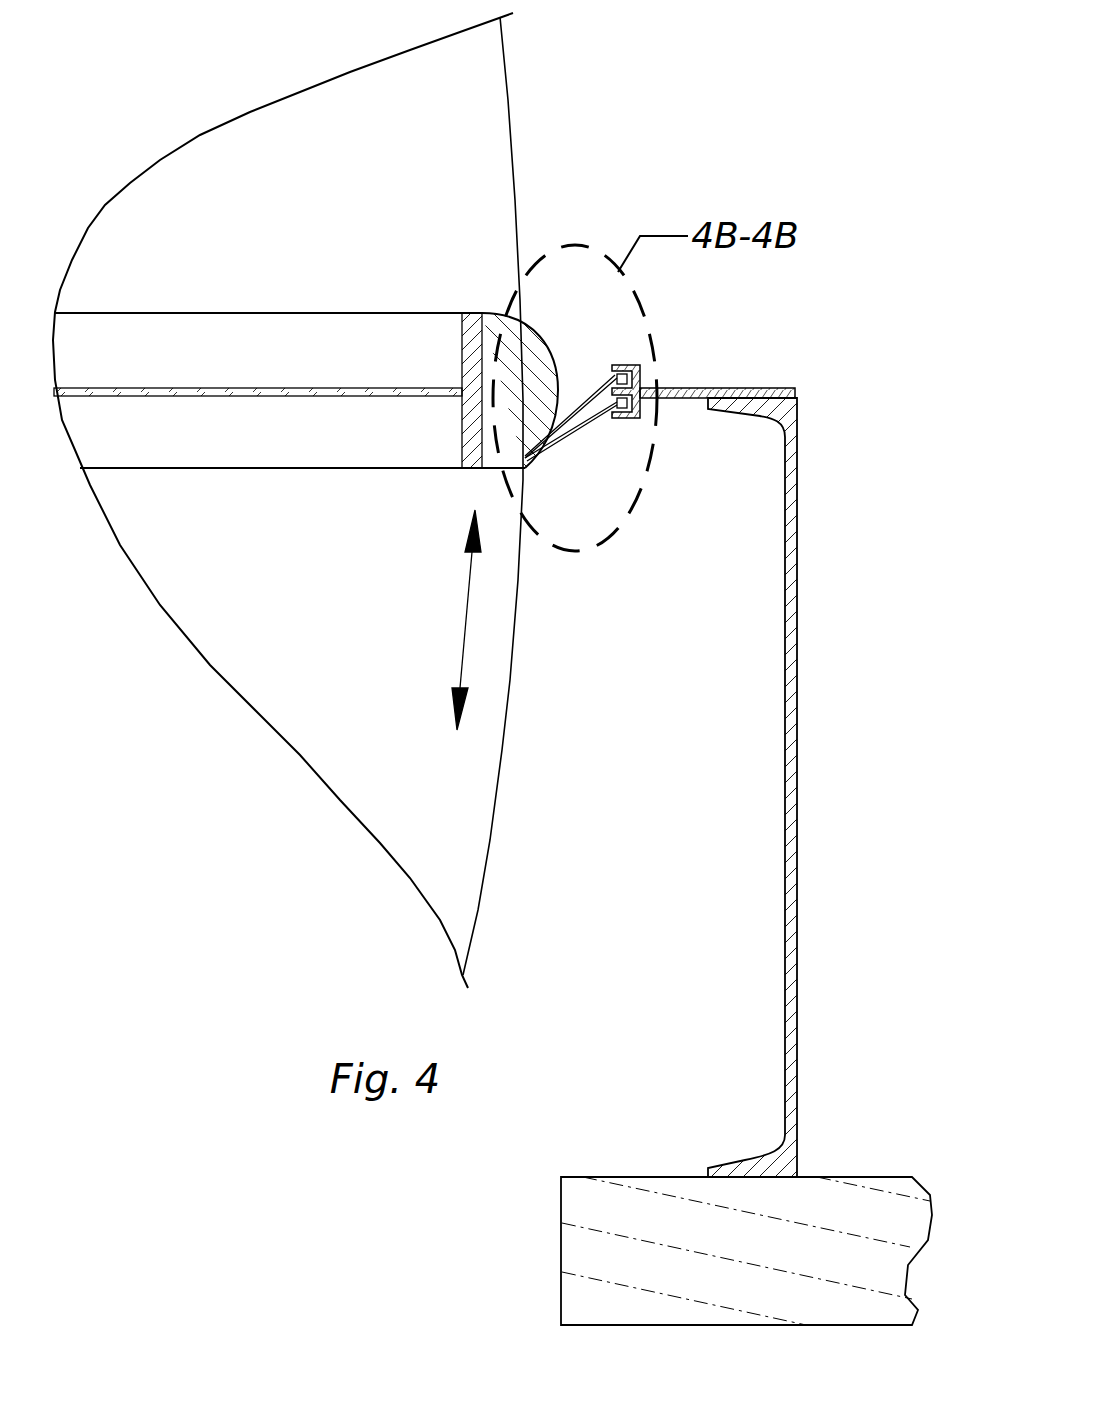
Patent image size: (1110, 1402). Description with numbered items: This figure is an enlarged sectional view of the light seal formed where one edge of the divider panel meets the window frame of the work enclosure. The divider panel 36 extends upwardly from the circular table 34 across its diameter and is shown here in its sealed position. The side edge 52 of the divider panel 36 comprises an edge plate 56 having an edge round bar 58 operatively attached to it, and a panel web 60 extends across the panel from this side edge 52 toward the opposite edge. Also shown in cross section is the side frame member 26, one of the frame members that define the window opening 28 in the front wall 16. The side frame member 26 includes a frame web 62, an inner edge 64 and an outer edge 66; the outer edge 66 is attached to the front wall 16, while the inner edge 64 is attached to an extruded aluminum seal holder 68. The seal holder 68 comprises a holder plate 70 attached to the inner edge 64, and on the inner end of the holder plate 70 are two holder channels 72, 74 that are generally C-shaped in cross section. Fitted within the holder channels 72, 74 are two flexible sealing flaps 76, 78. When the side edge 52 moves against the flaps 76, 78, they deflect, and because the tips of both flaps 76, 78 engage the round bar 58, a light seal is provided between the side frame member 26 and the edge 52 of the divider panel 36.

The front wall 16 is at (650, 1182).
The side frame member 26 is at (805, 614).
The window opening 28 is at (561, 1224).
The table 34 is at (508, 657).
The divider panel 36 is at (282, 474).
The side edge 52 is at (493, 290).
The edge plate 56 is at (470, 340).
The edge round bar 58 is at (557, 360).
The panel web 60 is at (222, 388).
The frame web 62 is at (787, 777).
The inner edge 64 is at (750, 405).
The outer edge 66 is at (745, 1160).
The seal holder 68 is at (738, 385).
The holder plate 70 is at (710, 390).
The holder channel 72 is at (628, 365).
The holder channel 74 is at (632, 418).
The flexible sealing flap 76 is at (600, 393).
The flexible sealing flap 78 is at (584, 424).